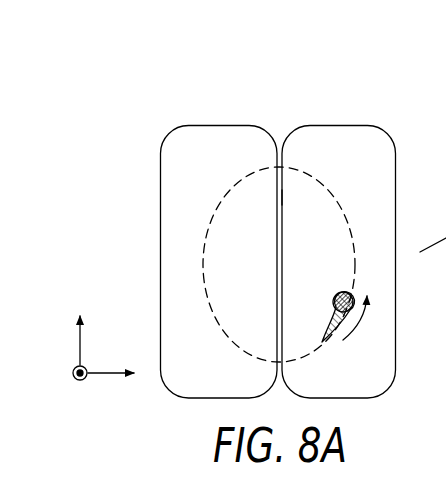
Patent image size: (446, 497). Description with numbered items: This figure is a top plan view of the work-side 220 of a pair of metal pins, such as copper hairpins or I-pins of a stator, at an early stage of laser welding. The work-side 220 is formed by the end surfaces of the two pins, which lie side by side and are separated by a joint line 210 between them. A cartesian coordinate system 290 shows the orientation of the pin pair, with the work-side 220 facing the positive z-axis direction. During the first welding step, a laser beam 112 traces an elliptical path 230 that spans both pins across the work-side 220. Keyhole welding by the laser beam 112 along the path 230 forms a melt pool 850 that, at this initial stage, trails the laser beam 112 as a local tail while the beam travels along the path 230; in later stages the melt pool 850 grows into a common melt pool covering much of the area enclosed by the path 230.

The work-side 220 is at (224, 238).
The interface between lens elements 210 is at (283, 196).
The elliptical path 230 is at (203, 262).
The laser beam 112 is at (335, 300).
The melt pool 850 is at (328, 322).
The cartesian coordinate system 290 is at (100, 392).